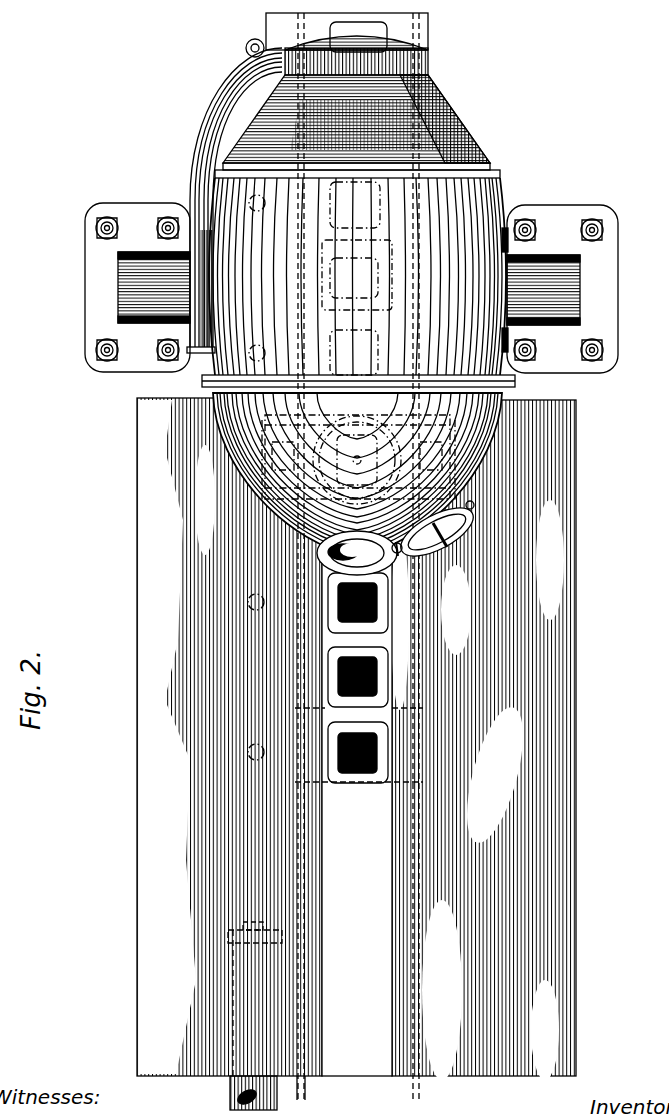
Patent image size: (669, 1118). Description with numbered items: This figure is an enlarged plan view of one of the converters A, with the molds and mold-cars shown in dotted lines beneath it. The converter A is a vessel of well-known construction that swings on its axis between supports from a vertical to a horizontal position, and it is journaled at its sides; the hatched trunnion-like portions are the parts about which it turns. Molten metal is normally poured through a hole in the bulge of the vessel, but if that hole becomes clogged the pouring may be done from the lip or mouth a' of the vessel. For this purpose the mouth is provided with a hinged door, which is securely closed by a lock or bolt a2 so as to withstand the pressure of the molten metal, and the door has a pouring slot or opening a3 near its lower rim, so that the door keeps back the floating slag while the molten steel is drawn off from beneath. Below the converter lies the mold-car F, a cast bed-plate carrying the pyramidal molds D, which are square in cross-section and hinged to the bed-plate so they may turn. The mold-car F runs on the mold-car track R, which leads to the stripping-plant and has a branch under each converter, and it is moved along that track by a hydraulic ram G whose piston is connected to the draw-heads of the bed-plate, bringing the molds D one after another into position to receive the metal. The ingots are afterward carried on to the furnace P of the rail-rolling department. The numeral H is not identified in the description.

The converter A is at (358, 469).
The furnace P is at (351, 288).
The floor planks H is at (356, 739).
The mold-car F is at (328, 792).
The mold D is at (360, 810).
The lip or mouth of the vessel a' is at (357, 553).
The lock or bolt a2 is at (474, 504).
The pouring slot or opening a3 is at (447, 547).
The hydraulic ram G is at (236, 1092).
The mold-car track R is at (297, 1090).